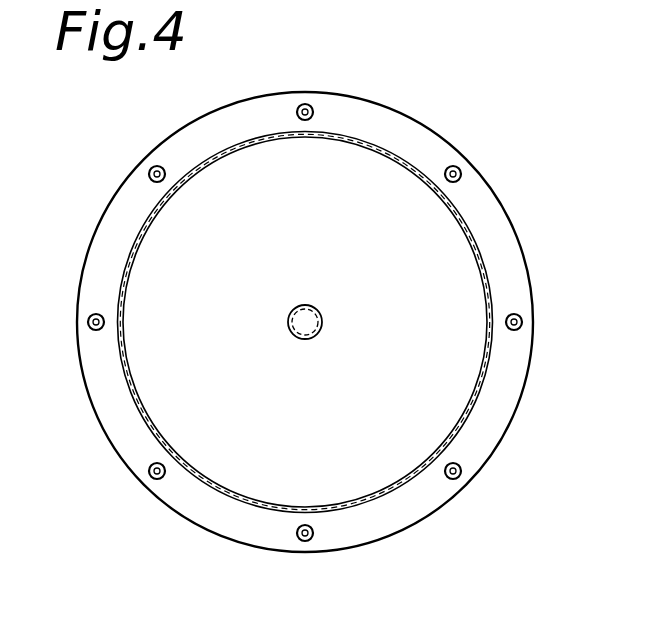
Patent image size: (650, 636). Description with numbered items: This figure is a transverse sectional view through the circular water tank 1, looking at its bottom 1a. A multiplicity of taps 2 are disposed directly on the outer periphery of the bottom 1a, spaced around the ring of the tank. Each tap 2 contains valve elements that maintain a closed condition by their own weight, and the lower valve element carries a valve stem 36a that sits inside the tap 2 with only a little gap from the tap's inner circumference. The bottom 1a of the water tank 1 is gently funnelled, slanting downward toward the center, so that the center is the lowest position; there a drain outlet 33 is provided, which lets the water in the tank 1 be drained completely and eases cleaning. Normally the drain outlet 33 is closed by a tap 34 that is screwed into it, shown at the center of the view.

The water tank 1 is at (430, 522).
The bottom 1a is at (375, 522).
The tap 2 is at (461, 476).
The valve stem 36a is at (462, 470).
The drain outlet 33 is at (320, 316).
The tap 34 is at (305, 330).